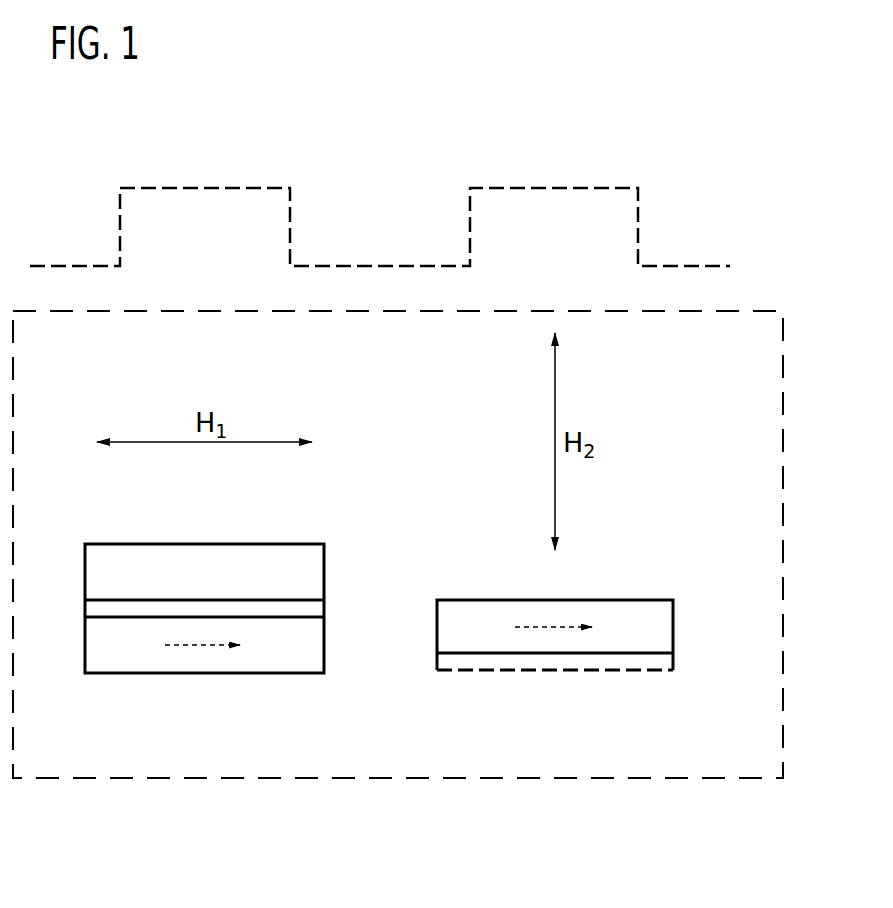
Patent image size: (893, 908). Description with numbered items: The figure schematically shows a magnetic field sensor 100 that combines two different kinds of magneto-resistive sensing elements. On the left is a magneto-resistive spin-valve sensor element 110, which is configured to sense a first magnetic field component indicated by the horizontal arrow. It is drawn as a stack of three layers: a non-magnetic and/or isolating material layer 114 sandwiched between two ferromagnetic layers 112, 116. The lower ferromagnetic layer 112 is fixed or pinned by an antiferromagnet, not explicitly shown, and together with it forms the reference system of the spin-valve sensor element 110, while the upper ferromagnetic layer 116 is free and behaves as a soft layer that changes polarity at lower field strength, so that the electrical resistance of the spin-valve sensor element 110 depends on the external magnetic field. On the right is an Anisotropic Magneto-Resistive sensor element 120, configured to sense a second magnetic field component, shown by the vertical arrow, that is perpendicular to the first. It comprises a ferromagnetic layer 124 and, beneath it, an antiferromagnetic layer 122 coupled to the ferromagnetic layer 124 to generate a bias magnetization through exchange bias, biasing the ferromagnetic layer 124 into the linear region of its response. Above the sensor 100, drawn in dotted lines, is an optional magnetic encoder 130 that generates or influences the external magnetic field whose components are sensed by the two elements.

The magnetic field sensor 100 is at (355, 802).
The magneto-resistive spin-valve sensor element 110 is at (243, 591).
The ferromagnetic layer 112 is at (205, 673).
The non-magnetic and/or isolating material layer 114 is at (308, 610).
The ferromagnetic layer 116 is at (308, 572).
The Anisotropic Magneto-Resistive (AMR) sensor element 120 is at (593, 591).
The antiferromagnetic layer 122 is at (548, 670).
The ferromagnetic layer 124 is at (655, 627).
The magnetic encoder 130 is at (427, 135).